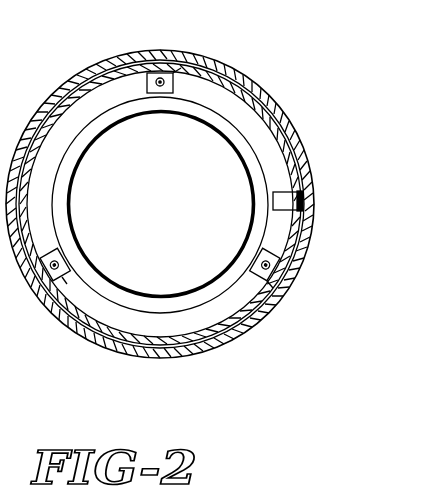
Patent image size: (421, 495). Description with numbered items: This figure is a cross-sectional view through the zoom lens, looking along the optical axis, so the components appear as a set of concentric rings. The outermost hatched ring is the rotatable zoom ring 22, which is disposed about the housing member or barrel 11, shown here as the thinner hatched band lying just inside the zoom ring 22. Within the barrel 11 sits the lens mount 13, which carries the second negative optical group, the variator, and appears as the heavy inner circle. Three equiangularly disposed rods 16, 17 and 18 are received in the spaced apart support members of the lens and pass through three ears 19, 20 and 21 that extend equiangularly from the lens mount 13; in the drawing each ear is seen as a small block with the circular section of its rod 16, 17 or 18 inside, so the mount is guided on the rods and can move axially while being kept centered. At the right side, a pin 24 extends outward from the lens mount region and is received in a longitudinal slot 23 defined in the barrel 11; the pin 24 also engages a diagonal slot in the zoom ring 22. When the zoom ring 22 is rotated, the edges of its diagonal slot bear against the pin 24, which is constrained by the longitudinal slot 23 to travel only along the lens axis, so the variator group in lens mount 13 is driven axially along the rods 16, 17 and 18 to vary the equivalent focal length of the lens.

The housing member 11 is at (242, 99).
The lens mount 13 is at (237, 144).
The rod 16 is at (160, 79).
The rod 17 is at (48, 272).
The rod 18 is at (279, 259).
The ear 19 is at (178, 71).
The ear 20 is at (66, 283).
The ear 21 is at (268, 283).
The zoom ring 22 is at (89, 72).
The longitudinal slot 23 is at (307, 192).
The pin 24 is at (273, 202).